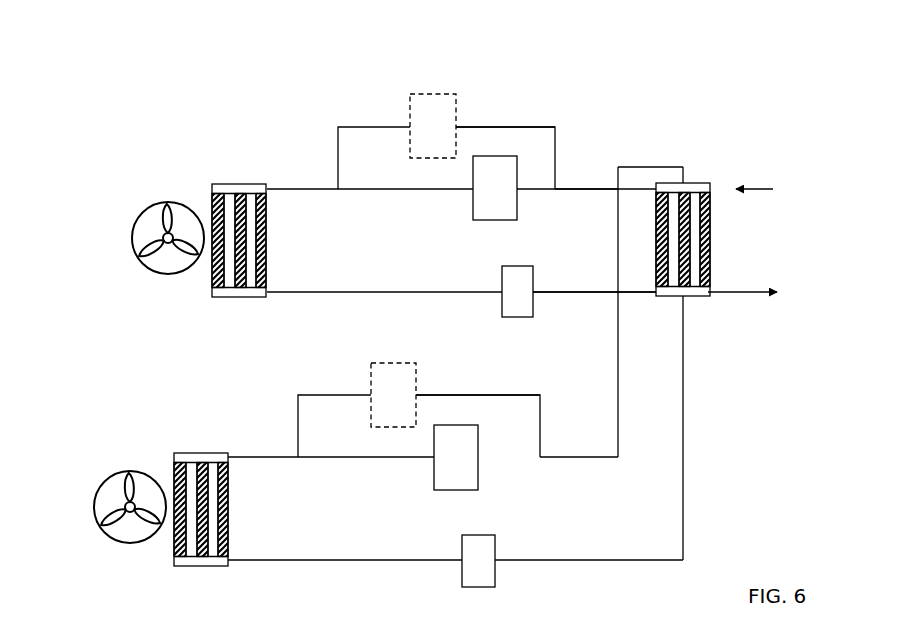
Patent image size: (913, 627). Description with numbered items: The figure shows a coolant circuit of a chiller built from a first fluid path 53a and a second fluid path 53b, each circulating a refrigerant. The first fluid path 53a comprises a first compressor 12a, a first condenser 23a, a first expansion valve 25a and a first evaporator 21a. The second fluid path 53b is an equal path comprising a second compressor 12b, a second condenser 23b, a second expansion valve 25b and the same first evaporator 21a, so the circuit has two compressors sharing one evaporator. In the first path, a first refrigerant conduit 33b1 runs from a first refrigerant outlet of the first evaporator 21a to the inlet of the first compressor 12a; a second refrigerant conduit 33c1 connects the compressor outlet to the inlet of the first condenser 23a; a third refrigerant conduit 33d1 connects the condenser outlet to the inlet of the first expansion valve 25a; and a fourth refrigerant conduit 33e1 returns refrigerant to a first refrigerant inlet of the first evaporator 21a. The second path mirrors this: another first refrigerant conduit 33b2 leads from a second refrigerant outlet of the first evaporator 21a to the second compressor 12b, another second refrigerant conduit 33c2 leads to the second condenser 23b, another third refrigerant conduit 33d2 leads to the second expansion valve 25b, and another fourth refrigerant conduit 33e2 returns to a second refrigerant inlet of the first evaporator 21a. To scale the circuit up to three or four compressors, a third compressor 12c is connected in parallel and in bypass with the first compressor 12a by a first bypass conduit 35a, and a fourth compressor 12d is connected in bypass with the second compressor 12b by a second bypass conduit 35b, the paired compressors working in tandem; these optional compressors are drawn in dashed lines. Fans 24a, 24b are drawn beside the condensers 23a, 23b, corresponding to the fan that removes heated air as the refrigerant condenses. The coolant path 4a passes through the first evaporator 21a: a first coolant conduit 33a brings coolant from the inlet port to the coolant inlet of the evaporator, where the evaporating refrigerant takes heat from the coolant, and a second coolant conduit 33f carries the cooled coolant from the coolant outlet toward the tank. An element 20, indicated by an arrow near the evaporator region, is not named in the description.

The coolant path 4a is at (828, 198).
The heat exchange unit 20 is at (670, 115).
The first evaporator 21a is at (685, 184).
The first condenser 23a is at (237, 197).
The second condenser 23b is at (198, 465).
The fan 24a is at (153, 206).
The fan 24b is at (112, 477).
The first expansion valve 25a is at (520, 270).
The second expansion valve 25b is at (482, 540).
The first compressor 12a is at (478, 202).
The second compressor 12b is at (438, 472).
The third compressor 12c is at (427, 95).
The fourth compressor 12d is at (410, 363).
The first coolant conduit 33a is at (768, 188).
The second coolant conduit 33f is at (736, 292).
The first refrigerant conduit 33b1 is at (587, 187).
The another first refrigerant conduit 33b2 is at (567, 455).
The second refrigerant conduit 33c1 is at (297, 187).
The another second refrigerant conduit 33c2 is at (342, 462).
The third refrigerant conduit 33d1 is at (370, 293).
The another third refrigerant conduit 33d2 is at (332, 563).
The fourth refrigerant conduit 33e1 is at (585, 292).
The another fourth refrigerant conduit 33e2 is at (543, 563).
The first bypass conduit 35a is at (500, 126).
The second bypass conduit 35b is at (466, 395).
The first fluid path 53a is at (338, 92).
The second fluid path 53b is at (270, 415).